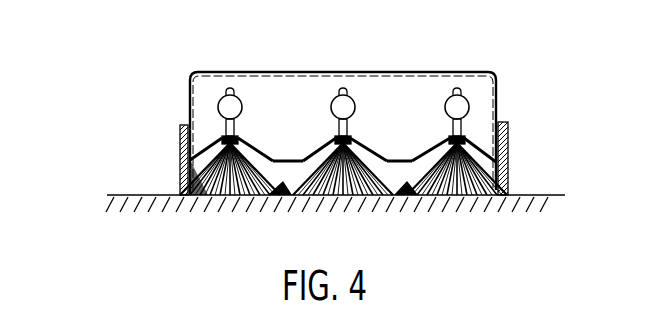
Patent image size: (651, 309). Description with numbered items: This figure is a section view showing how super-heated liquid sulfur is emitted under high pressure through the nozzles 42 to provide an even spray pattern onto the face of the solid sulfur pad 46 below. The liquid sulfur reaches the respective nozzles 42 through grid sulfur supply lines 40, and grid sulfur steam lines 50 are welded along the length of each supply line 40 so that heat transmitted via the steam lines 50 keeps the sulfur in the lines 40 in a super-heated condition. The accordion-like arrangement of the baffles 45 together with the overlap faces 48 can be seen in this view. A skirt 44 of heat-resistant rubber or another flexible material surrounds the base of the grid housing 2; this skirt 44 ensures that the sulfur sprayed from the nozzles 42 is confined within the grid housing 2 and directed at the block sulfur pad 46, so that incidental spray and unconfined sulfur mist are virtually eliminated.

The grid housing 2 is at (106, 119).
The grid sulfur supply line 40 is at (243, 106).
The nozzle 42 is at (237, 130).
The skirt 44 is at (180, 150).
The baffle 45 is at (213, 143).
The solid sulfur pad 46 is at (352, 240).
The overlap face 48 is at (294, 160).
The grid sulfur steam line 50 is at (234, 92).